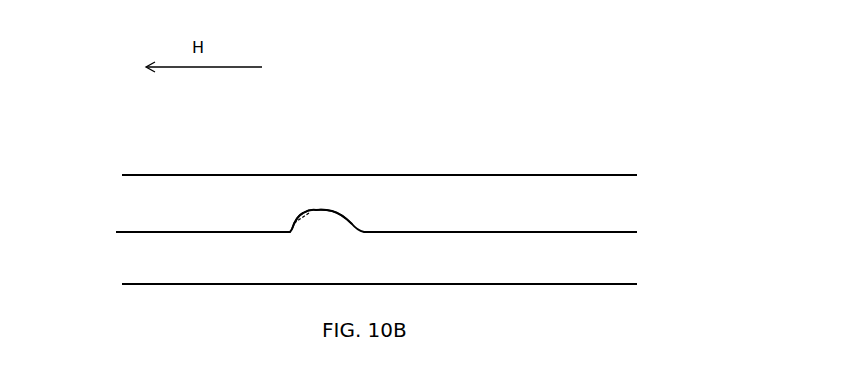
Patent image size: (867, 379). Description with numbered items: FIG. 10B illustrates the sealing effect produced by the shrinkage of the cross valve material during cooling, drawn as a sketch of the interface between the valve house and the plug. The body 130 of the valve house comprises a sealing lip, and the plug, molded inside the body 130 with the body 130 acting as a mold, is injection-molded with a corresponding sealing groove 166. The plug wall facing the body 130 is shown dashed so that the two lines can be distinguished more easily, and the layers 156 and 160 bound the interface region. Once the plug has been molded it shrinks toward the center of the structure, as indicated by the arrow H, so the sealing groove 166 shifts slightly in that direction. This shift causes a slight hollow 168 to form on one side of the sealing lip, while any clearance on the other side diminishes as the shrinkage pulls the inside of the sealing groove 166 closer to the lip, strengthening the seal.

The upper layer 160 is at (142, 203).
The body 130 is at (137, 264).
The membrane layer 156 is at (339, 228).
The sealing groove 166 is at (314, 208).
The hollow 168 is at (290, 228).